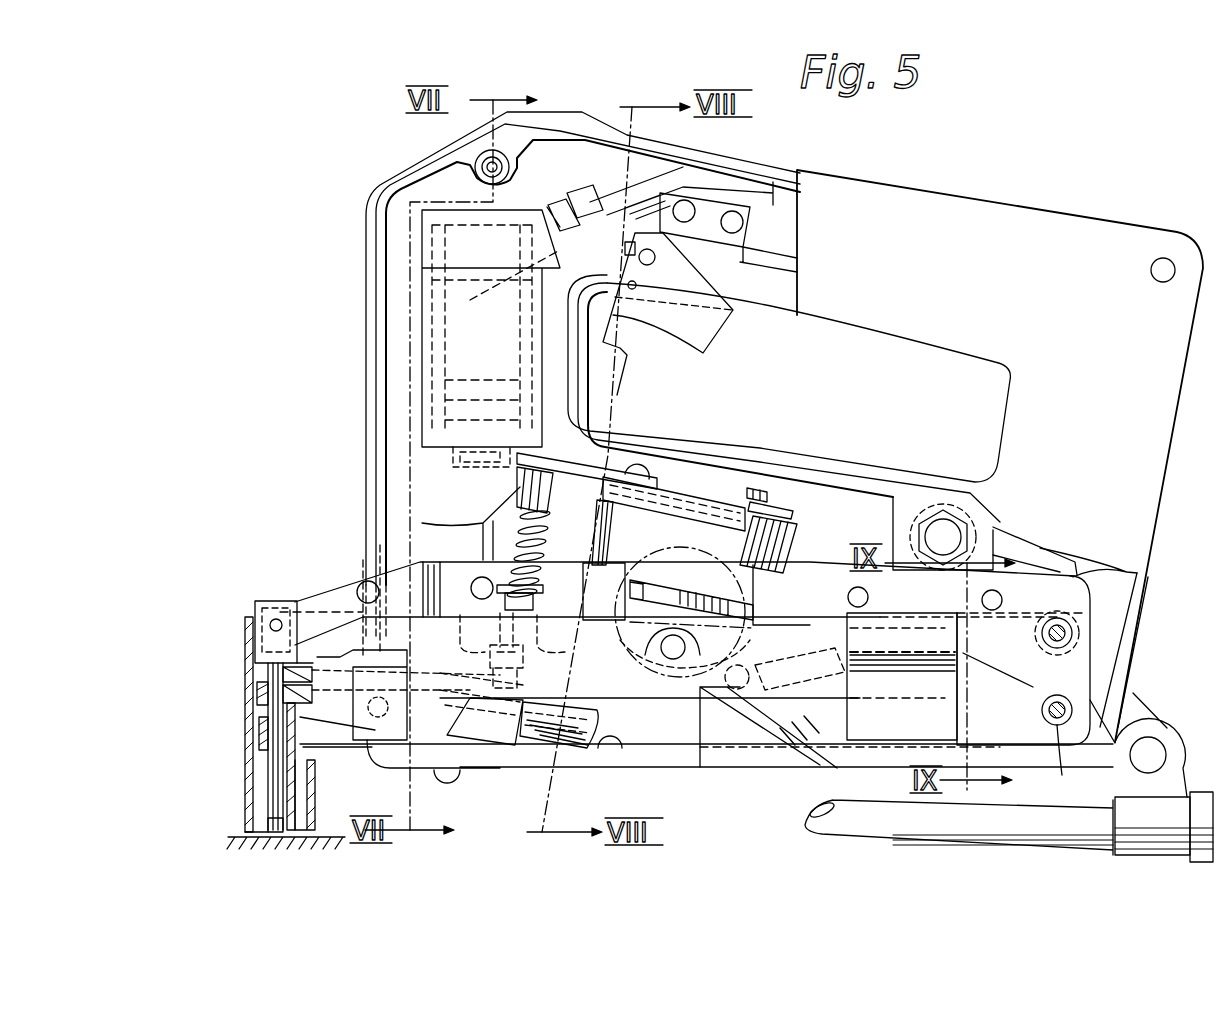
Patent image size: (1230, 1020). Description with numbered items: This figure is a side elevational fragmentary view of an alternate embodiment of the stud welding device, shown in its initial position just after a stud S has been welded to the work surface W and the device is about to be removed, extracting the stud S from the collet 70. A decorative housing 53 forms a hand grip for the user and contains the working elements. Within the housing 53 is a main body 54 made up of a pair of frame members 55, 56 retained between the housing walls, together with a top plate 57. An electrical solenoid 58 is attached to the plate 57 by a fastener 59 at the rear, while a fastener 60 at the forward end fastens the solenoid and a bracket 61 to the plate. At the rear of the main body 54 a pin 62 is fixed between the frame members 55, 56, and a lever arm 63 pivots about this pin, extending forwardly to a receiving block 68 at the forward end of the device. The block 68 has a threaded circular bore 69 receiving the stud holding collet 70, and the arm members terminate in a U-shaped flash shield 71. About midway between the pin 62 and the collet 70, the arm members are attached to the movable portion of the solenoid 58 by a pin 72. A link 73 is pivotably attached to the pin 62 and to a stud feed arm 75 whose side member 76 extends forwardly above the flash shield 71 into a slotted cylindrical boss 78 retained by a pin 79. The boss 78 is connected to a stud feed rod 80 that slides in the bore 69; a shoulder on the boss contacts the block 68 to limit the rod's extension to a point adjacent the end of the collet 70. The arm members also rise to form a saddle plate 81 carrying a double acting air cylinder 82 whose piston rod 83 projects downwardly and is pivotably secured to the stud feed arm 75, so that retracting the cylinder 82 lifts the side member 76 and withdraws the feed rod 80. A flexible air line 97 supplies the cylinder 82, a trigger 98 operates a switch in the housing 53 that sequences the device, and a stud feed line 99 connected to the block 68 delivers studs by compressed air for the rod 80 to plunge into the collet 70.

The decorative housing 53 is at (797, 172).
The main body 54 is at (643, 752).
The frame member 55 is at (935, 697).
The frame member 56 is at (1092, 660).
The top plate 57 is at (805, 520).
The electrical solenoid 58 is at (790, 537).
The fastener 59 is at (786, 500).
The fastener 60 is at (650, 474).
The bracket 61 is at (572, 460).
The pin 62 is at (1059, 764).
The lever arm 63 is at (645, 698).
The receiving block 68 is at (302, 720).
The circular bore 69 is at (262, 714).
The stud holding collet 70 is at (270, 798).
The flash shield 71 is at (315, 800).
The pin 72 is at (1065, 633).
The link 73 is at (1085, 690).
The stud feed arm 75 is at (1087, 565).
The side member 76 is at (1082, 595).
The slotted cylindrical boss 78 is at (280, 600).
The pin 79 is at (270, 626).
The stud feed rod 80 is at (270, 760).
The saddle plate 81 is at (420, 448).
The double acting air cylinder 82 is at (420, 298).
The piston rod 83 is at (480, 490).
The flexible air line 97 is at (604, 188).
The trigger 98 is at (720, 345).
The stud feed line 99 is at (1015, 845).
The work surface W is at (245, 826).
The stud S is at (285, 835).